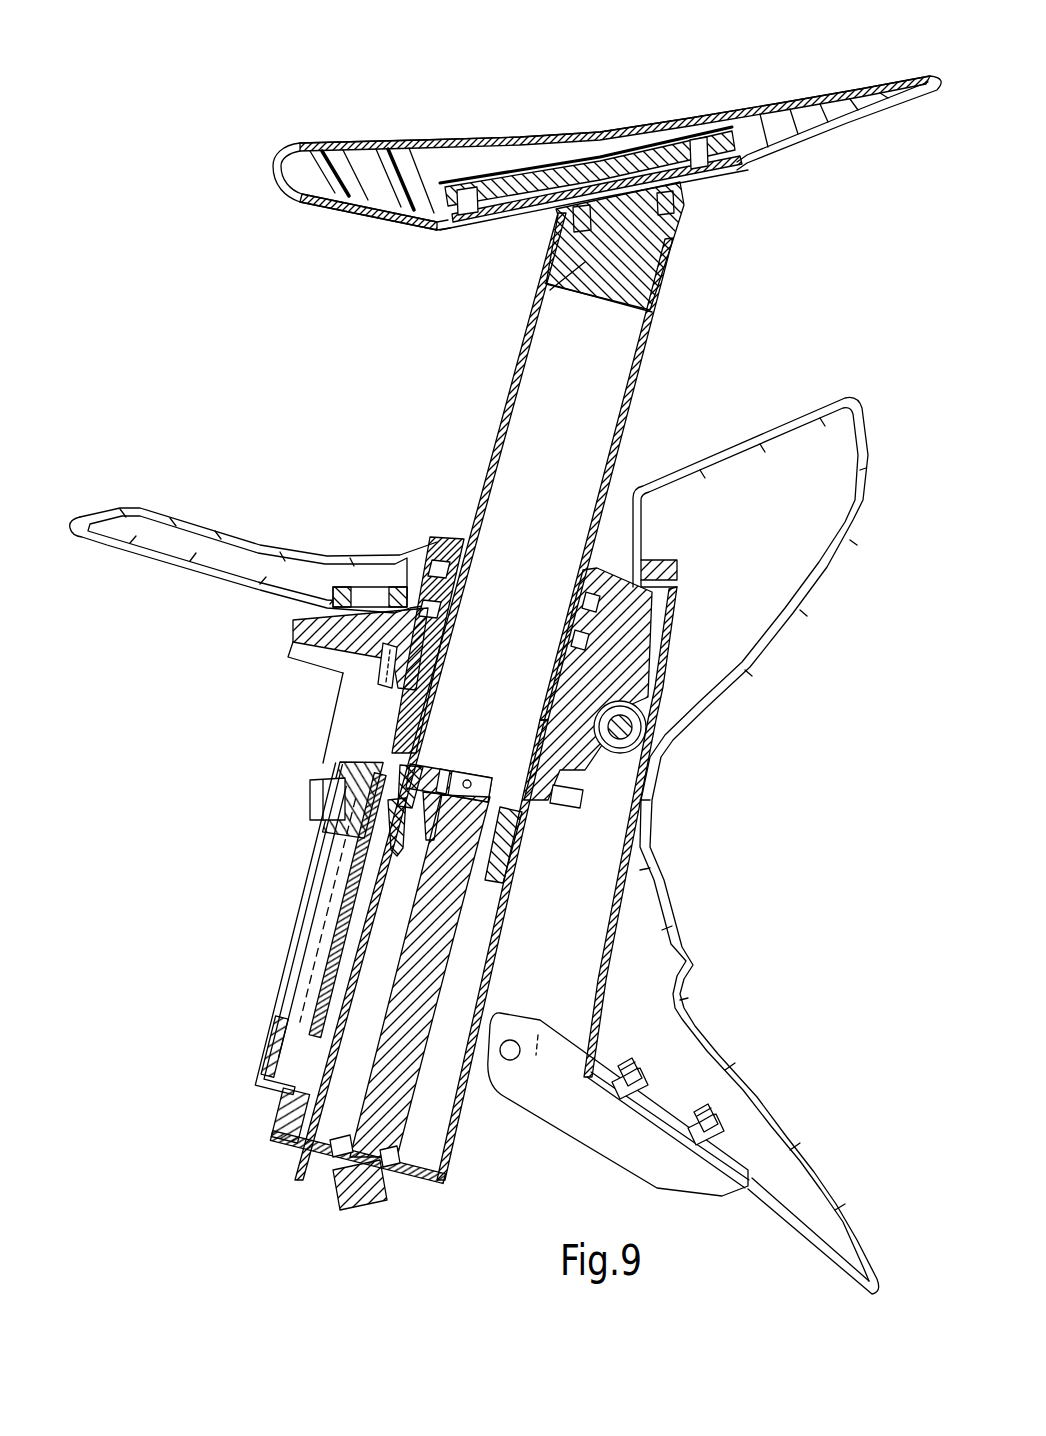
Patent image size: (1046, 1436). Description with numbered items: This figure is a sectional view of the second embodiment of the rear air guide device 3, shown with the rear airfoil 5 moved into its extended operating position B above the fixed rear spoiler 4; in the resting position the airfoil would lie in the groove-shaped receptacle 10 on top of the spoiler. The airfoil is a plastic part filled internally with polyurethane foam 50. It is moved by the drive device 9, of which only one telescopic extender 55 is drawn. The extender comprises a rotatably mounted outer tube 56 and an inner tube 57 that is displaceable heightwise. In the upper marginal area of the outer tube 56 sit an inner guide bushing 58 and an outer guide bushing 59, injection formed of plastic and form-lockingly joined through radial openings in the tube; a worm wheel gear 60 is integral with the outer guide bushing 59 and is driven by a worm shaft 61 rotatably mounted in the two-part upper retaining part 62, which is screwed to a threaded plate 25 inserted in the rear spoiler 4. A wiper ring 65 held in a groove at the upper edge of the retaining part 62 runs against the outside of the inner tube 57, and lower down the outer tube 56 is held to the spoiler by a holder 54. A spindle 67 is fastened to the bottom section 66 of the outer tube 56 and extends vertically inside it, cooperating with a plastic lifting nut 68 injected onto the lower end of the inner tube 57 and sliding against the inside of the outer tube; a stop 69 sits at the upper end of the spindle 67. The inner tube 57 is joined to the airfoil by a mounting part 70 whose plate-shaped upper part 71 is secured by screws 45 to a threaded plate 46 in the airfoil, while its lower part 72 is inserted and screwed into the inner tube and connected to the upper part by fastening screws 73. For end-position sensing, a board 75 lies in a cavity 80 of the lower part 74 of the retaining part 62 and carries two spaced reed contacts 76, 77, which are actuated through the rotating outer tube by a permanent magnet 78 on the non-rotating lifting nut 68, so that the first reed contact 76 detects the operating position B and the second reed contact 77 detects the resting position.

The rear air guide device 3 is at (900, 72).
The rear spoiler 4 is at (870, 408).
The rear airfoil 5 is at (516, 136).
The drive device 9 is at (264, 1152).
The groove-shaped receptacle 10 is at (262, 540).
The threaded plate 25 is at (345, 590).
The screws 45 is at (470, 222).
The threaded plate 46 is at (615, 158).
The polyurethane foam 50 is at (340, 160).
The holder 54 is at (600, 1145).
The telescopic extender 55 is at (548, 878).
The outer tube 56 is at (500, 943).
The inner tube 57 is at (650, 355).
The inner guide bushing 58 is at (578, 610).
The outer guide bushing 59 is at (574, 800).
The worm wheel gear 60 is at (372, 670).
The worm shaft 61 is at (632, 728).
The upper retaining part 62 is at (290, 633).
The wiper ring 65 is at (625, 572).
The bottom section 66 is at (320, 1150).
The spindle 67 is at (420, 996).
The lifting nut 68 is at (394, 876).
The stop 69 is at (494, 778).
The mounting part 70 is at (690, 210).
The plate-shaped upper part 71 is at (526, 216).
The lower part 72 is at (578, 270).
The fastening screws 73 is at (652, 263).
The lower part 74 is at (340, 725).
The board 75 is at (312, 947).
The first reed contact 76 is at (352, 767).
The second reed contact 77 is at (282, 1045).
The permanent magnet 78 is at (436, 760).
The cavity 80 is at (330, 857).
The extended operating position B is at (264, 158).